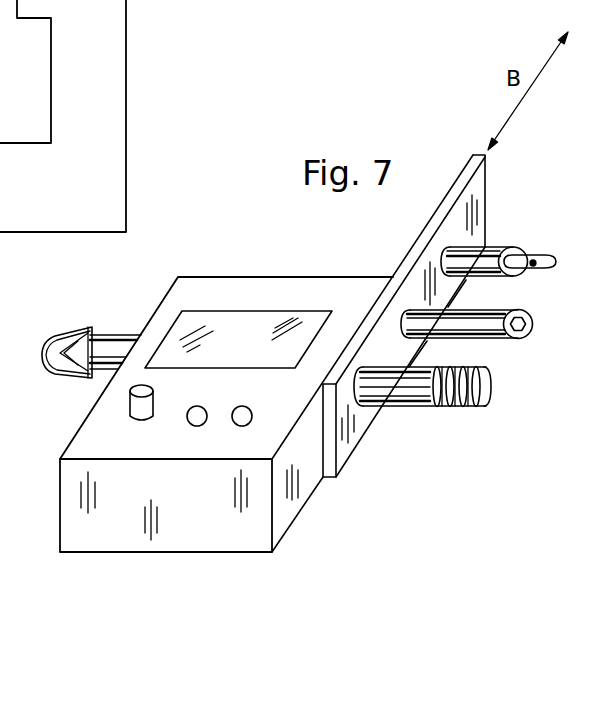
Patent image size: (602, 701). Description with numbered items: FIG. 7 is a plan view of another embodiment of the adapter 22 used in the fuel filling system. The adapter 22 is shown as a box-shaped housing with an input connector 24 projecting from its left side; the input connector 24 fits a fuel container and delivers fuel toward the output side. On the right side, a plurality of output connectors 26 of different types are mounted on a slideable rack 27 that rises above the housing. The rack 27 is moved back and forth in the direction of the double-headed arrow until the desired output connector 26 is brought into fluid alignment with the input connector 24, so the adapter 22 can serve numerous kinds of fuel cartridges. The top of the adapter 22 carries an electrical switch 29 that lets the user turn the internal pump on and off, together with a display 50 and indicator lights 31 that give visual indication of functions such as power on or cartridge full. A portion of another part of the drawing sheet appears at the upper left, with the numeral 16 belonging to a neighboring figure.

The housing 16 is at (21, 70).
The adapter 22 is at (255, 245).
The input connector 24 is at (72, 331).
The output connectors 26 is at (485, 276).
The slideable rack 27 is at (485, 201).
The electrical switch 29 is at (128, 407).
The indicator lights 31 is at (196, 406).
The display 50 is at (257, 310).